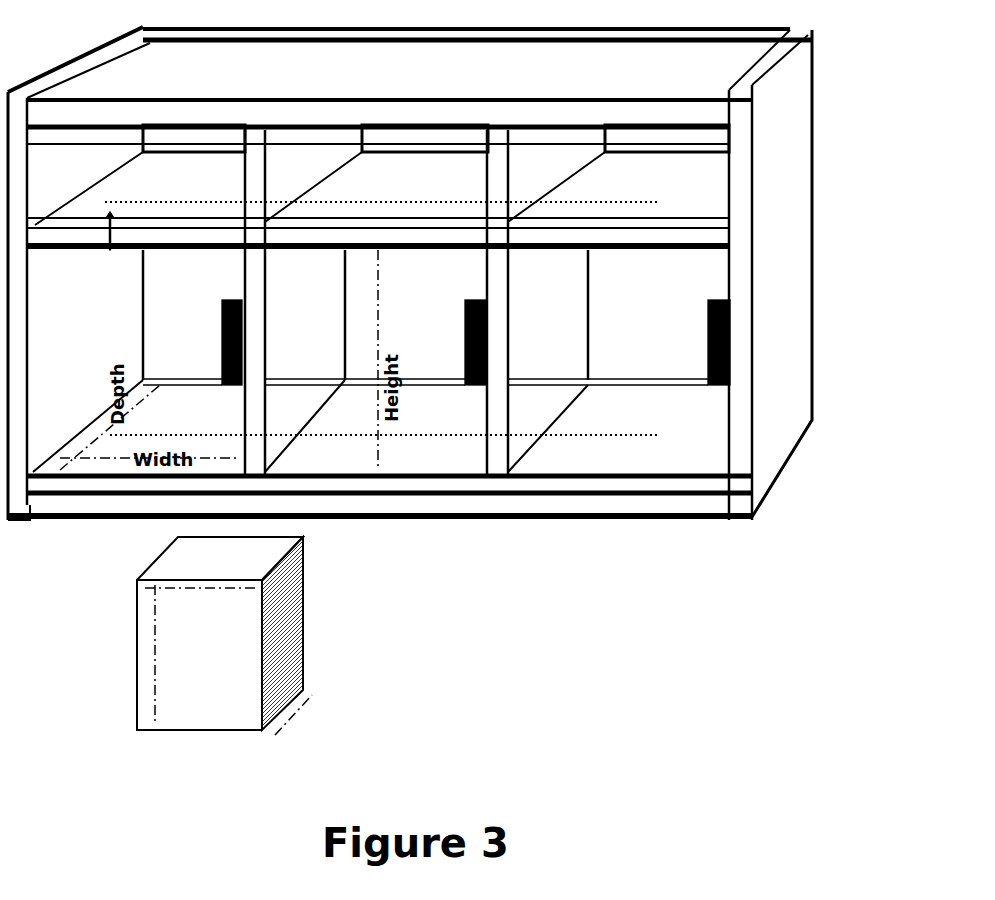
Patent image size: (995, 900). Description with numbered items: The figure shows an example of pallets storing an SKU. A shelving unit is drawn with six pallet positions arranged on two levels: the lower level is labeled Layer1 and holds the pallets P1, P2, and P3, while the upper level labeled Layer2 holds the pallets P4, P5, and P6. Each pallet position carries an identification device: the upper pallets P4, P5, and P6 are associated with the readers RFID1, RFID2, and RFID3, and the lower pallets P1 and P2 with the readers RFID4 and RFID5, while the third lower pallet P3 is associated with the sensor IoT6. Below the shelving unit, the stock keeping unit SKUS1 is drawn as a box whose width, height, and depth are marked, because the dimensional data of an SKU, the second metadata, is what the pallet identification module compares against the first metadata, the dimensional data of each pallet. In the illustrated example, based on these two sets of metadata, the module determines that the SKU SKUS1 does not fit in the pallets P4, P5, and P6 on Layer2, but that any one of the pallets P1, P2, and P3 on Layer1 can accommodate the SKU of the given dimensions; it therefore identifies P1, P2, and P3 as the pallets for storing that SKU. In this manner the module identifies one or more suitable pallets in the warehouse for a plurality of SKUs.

The RFID reader of layer 2 position P4 RFID1 is at (212, 116).
The RFID reader of layer 2 position P5 RFID2 is at (415, 116).
The RFID reader of layer 2 position P6 RFID3 is at (620, 116).
The RFID reader of layer 1 position P1 RFID4 is at (244, 345).
The RFID reader of layer 1 position P2 RFID5 is at (489, 345).
The IoT sensor of layer 1 position P3 IoT6 is at (738, 345).
The pallet P1 is at (196, 336).
The pallet P2 is at (416, 346).
The pallet P3 is at (658, 346).
The pallet P4 is at (190, 186).
The pallet P5 is at (440, 191).
The pallet P6 is at (690, 196).
The shelf layer 1 Layer1 is at (651, 444).
The shelf layer 2 Layer2 is at (665, 206).
The SKU SKUS1 is at (303, 617).